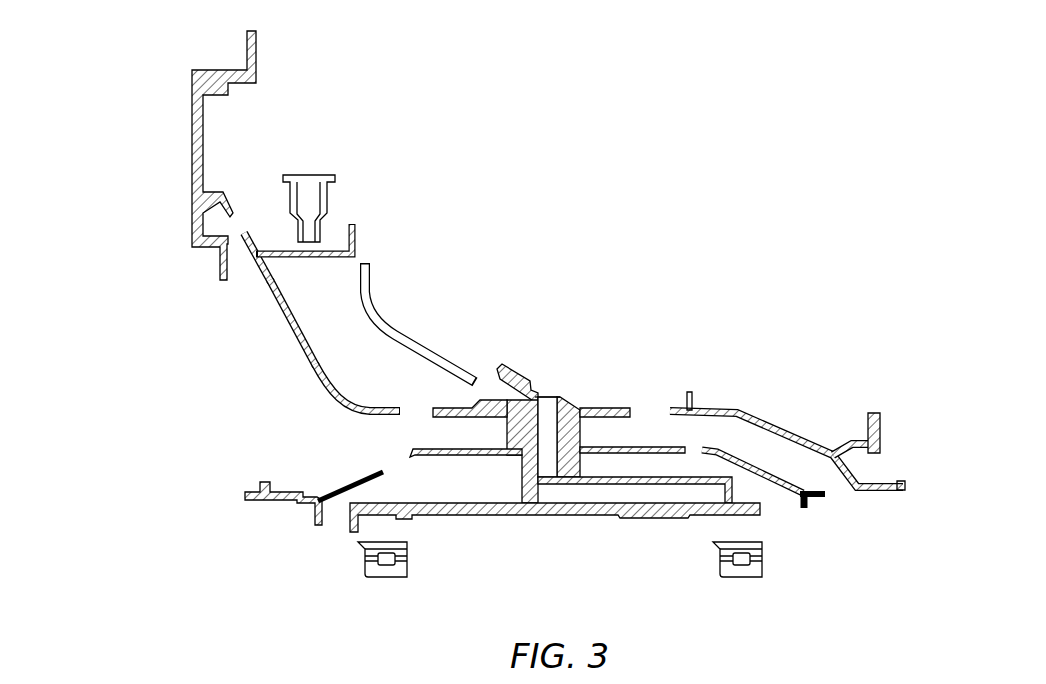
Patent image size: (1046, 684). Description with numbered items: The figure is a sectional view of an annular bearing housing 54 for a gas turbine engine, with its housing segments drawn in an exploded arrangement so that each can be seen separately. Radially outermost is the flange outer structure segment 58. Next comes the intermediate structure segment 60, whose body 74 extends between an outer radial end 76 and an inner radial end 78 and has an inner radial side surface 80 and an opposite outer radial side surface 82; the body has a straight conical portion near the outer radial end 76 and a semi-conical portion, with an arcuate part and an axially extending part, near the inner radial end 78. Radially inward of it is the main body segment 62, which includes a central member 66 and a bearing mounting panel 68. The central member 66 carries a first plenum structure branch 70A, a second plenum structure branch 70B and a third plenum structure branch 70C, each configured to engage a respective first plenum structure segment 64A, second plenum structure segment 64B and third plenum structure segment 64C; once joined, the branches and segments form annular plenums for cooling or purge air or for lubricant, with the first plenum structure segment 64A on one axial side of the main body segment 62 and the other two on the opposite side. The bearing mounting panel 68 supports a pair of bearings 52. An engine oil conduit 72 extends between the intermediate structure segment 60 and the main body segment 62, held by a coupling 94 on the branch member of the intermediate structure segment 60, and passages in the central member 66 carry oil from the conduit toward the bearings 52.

The bearing 52 is at (403, 565).
The bearing housing 54 is at (808, 147).
The flange outer structure segment 58 is at (178, 126).
The intermediate structure segment 60 is at (292, 268).
The main body segment 62 is at (555, 417).
The first plenum structure segment 64A is at (266, 500).
The second plenum structure segment 64B is at (778, 428).
The third plenum structure segment 64C is at (788, 497).
The central member 66 is at (566, 396).
The bearing mounting panel 68 is at (552, 517).
The first plenum structure branch 70A is at (440, 457).
The second plenum structure branch 70B is at (622, 408).
The third plenum structure branch 70C is at (619, 447).
The engine oil conduit 72 is at (408, 318).
The body 74 is at (297, 386).
The outer radial end 76 is at (243, 230).
The inner radial end 78 is at (398, 410).
The inner radial side surface 80 is at (287, 297).
The outer radial side surface 82 is at (268, 293).
The coupling 94 is at (330, 192).